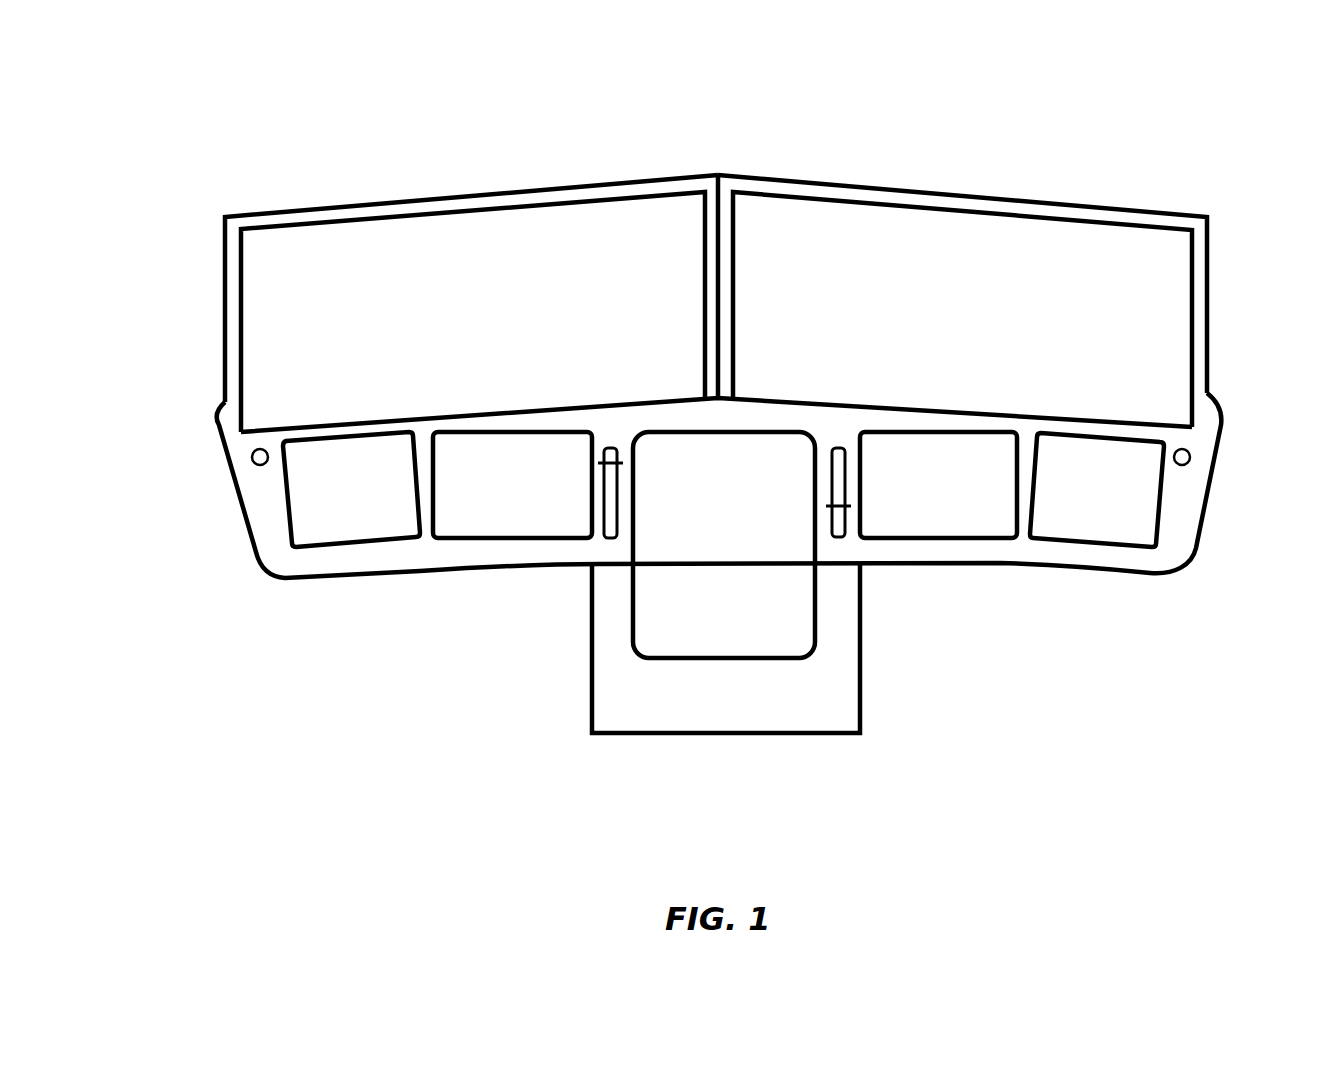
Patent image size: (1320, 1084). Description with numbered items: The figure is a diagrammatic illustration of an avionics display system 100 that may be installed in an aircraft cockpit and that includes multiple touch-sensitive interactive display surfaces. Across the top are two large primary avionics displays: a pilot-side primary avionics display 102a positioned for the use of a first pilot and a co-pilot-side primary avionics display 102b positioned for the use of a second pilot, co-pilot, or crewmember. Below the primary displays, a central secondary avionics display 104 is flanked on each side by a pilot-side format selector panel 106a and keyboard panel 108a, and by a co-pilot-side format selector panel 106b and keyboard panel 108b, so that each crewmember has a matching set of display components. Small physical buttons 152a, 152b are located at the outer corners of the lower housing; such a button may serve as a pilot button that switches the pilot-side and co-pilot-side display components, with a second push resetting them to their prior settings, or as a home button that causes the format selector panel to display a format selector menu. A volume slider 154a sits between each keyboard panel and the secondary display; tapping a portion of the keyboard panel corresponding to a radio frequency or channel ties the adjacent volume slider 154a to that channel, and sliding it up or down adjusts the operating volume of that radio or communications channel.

The avionics display system 100 is at (172, 137).
The pilot-side primary avionics display 102a is at (363, 240).
The co-pilot-side primary avionics display 102b is at (1002, 238).
The secondary avionics display 104 is at (748, 615).
The pilot-side format selector panel 106a is at (355, 518).
The co-pilot-side format selector panel 106b is at (1128, 512).
The pilot-side keyboard panel 108a is at (498, 512).
The co-pilot-side keyboard panel 108b is at (937, 513).
The physical button 152a is at (260, 466).
The physical button 152b is at (1191, 457).
The volume slider 154a is at (613, 540).